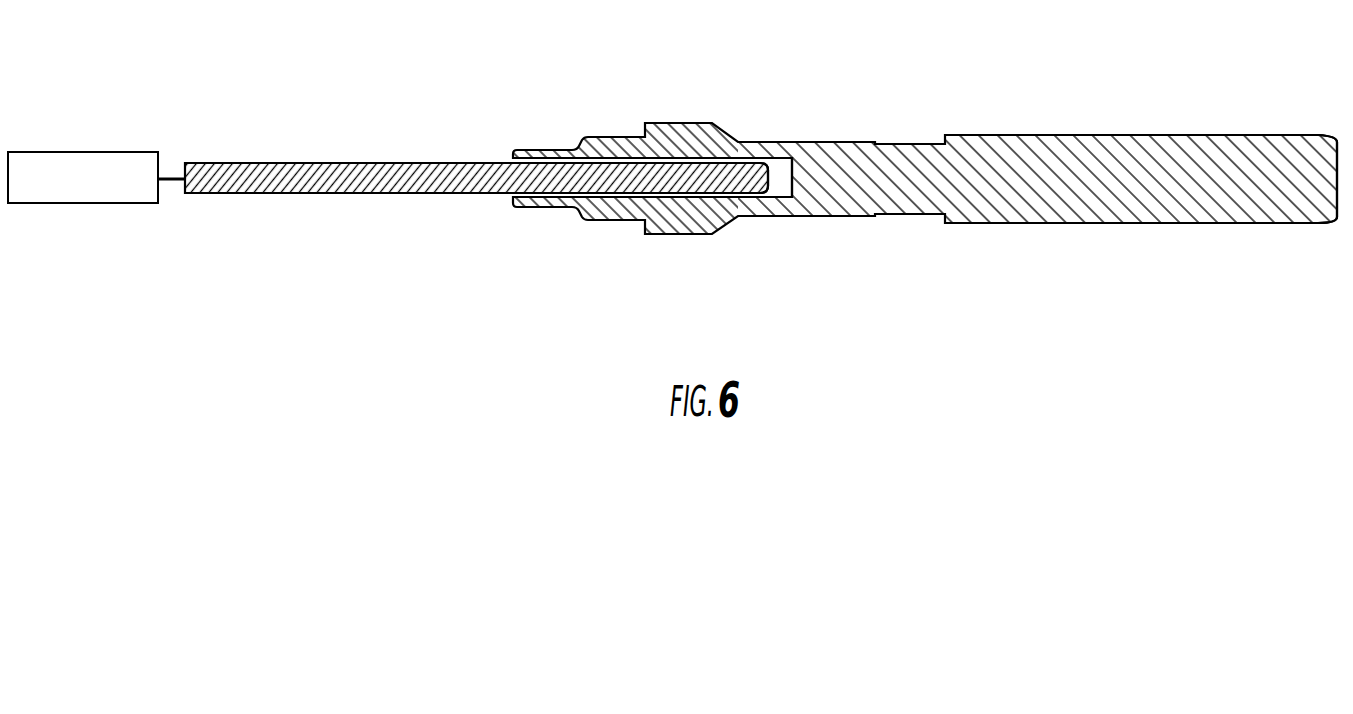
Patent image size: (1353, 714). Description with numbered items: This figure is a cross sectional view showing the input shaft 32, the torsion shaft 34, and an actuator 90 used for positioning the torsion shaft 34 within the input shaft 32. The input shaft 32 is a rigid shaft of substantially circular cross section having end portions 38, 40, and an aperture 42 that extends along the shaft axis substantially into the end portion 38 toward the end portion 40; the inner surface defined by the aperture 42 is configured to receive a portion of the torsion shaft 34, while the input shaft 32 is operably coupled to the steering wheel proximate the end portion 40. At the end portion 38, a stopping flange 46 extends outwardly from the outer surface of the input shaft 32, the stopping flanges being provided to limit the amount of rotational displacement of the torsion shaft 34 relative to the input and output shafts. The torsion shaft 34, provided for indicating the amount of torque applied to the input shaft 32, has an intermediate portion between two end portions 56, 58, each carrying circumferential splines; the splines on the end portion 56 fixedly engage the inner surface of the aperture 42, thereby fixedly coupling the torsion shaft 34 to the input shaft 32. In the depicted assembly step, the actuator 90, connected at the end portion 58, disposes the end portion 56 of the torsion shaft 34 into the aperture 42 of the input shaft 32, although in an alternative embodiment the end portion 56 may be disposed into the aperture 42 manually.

The input shaft 32 is at (1031, 128).
The torsion shaft 34 is at (485, 200).
The end portion 38 is at (680, 123).
The end portion 40 is at (1327, 135).
The aperture 42 is at (778, 188).
The stopping flange 46 is at (592, 136).
The end portion 56 is at (770, 172).
The end portion 58 is at (176, 192).
The actuator 90 is at (80, 152).